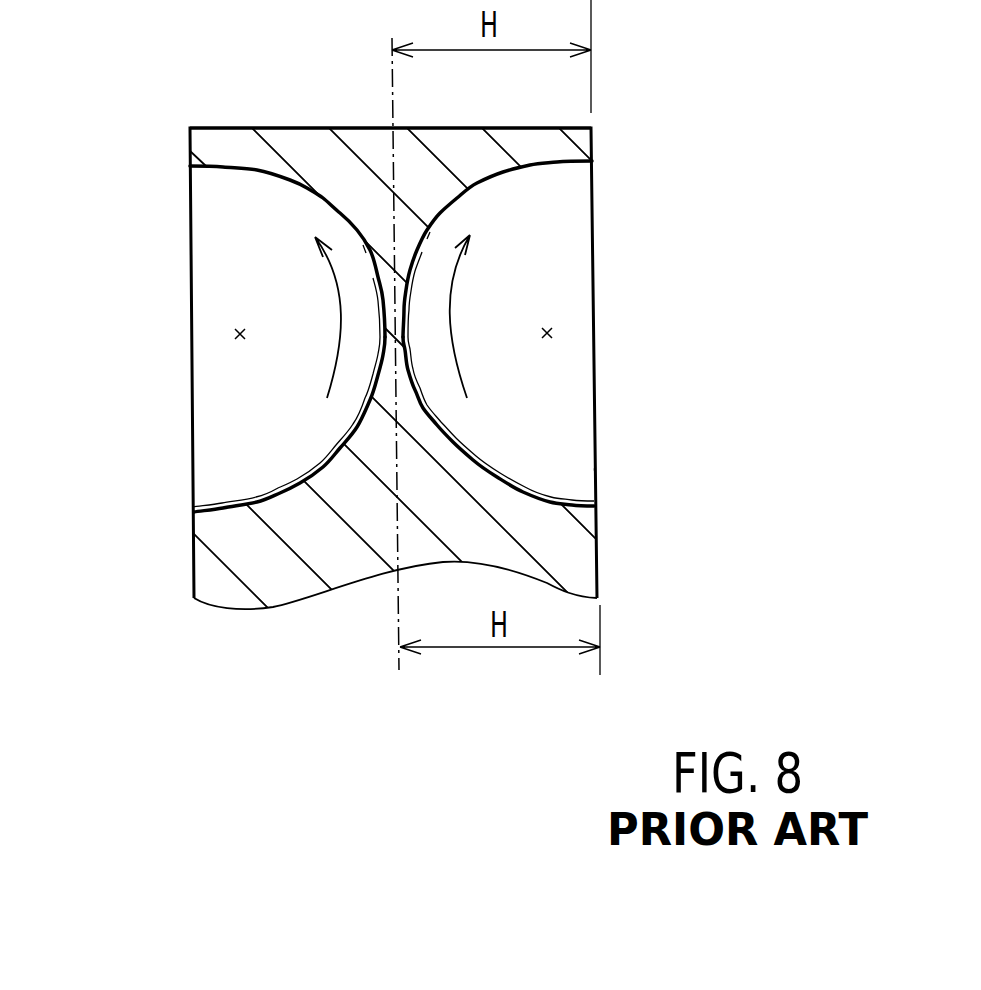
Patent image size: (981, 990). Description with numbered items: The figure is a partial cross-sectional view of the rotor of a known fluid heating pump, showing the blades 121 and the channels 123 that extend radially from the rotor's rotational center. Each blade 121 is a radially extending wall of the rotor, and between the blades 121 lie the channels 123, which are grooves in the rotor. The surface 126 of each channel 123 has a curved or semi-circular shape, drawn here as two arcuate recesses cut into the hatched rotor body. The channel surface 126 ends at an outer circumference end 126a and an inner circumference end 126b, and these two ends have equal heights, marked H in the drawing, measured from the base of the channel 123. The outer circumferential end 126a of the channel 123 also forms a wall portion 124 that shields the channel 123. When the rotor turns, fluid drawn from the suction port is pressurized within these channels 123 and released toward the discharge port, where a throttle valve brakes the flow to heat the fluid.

The blades 121 is at (192, 252).
The channels 123 is at (240, 334).
The wall portion 124 is at (545, 150).
The channel surface 126 is at (283, 490).
The outer circumference end 126a is at (190, 166).
The inner circumference end 126b is at (196, 510).